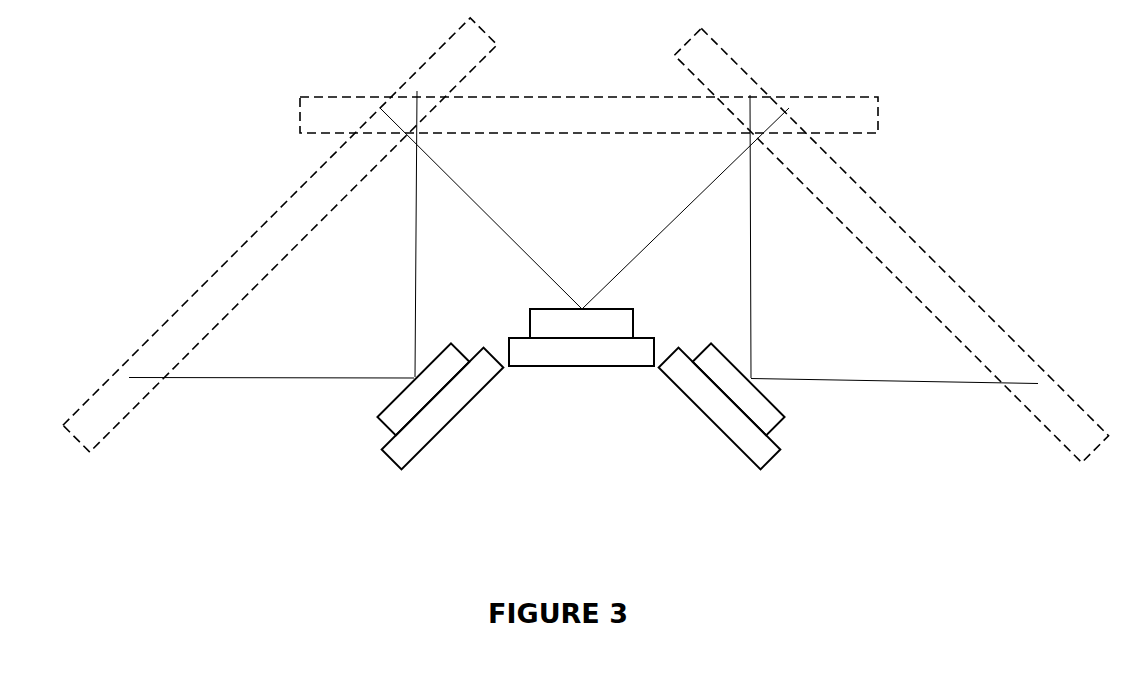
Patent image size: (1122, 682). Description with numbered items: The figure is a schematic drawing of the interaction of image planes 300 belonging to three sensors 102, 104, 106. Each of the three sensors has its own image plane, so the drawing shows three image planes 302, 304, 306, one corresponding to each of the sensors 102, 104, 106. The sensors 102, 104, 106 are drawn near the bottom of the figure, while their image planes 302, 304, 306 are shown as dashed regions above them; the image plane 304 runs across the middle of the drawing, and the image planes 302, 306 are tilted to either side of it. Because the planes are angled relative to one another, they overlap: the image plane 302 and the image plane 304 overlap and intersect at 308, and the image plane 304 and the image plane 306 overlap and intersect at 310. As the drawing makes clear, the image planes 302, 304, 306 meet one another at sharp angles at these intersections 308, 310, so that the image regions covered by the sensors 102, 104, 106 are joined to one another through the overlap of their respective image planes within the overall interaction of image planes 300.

The interaction of image planes 300 is at (586, 292).
The sensor 102 is at (448, 425).
The sensor 104 is at (572, 367).
The sensor 106 is at (705, 413).
The image plane 302 is at (240, 230).
The image plane 304 is at (582, 95).
The image plane 306 is at (902, 228).
The intersection of image planes 308 is at (395, 107).
The intersection of image planes 310 is at (765, 108).